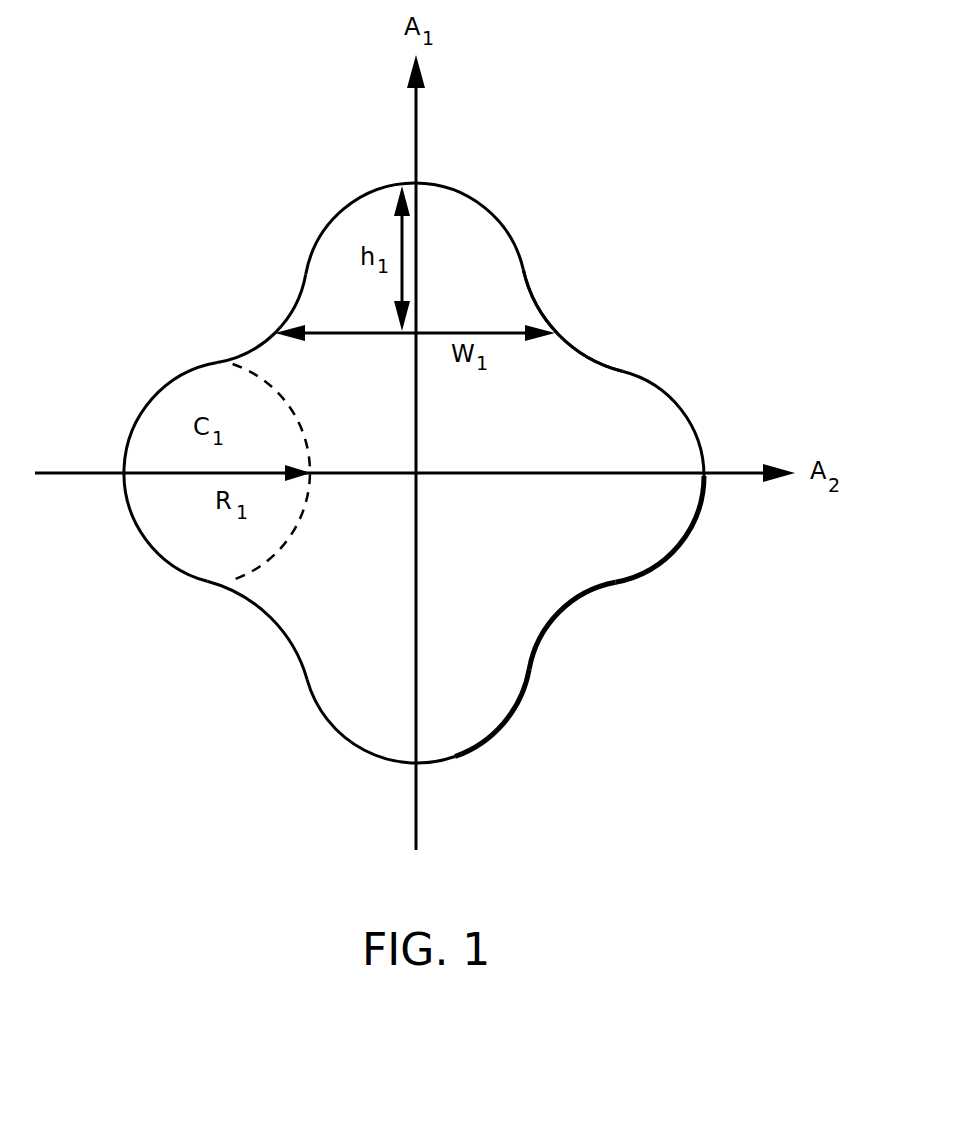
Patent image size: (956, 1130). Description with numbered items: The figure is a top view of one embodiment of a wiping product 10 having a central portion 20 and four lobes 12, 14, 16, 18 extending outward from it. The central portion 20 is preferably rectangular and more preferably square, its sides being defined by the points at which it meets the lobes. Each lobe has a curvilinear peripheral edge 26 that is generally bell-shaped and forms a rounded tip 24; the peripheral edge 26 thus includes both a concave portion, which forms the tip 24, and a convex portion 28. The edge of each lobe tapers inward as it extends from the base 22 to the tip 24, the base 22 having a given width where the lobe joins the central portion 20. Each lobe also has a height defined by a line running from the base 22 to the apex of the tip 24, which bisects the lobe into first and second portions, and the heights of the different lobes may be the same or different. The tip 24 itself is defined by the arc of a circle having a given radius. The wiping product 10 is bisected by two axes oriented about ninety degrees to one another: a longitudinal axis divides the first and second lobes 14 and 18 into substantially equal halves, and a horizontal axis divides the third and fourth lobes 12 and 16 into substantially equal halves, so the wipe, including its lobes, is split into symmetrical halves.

The wiping product 10 is at (428, 476).
The third lobe 12 is at (180, 505).
The first lobe 14 is at (430, 235).
The fourth lobe 16 is at (630, 497).
The second lobe 18 is at (438, 708).
The central portion 20 is at (460, 532).
The base 22 is at (580, 557).
The rounded tip 24 is at (682, 458).
The curvilinear peripheral edge 26 is at (630, 378).
The convex portion 28 is at (567, 343).